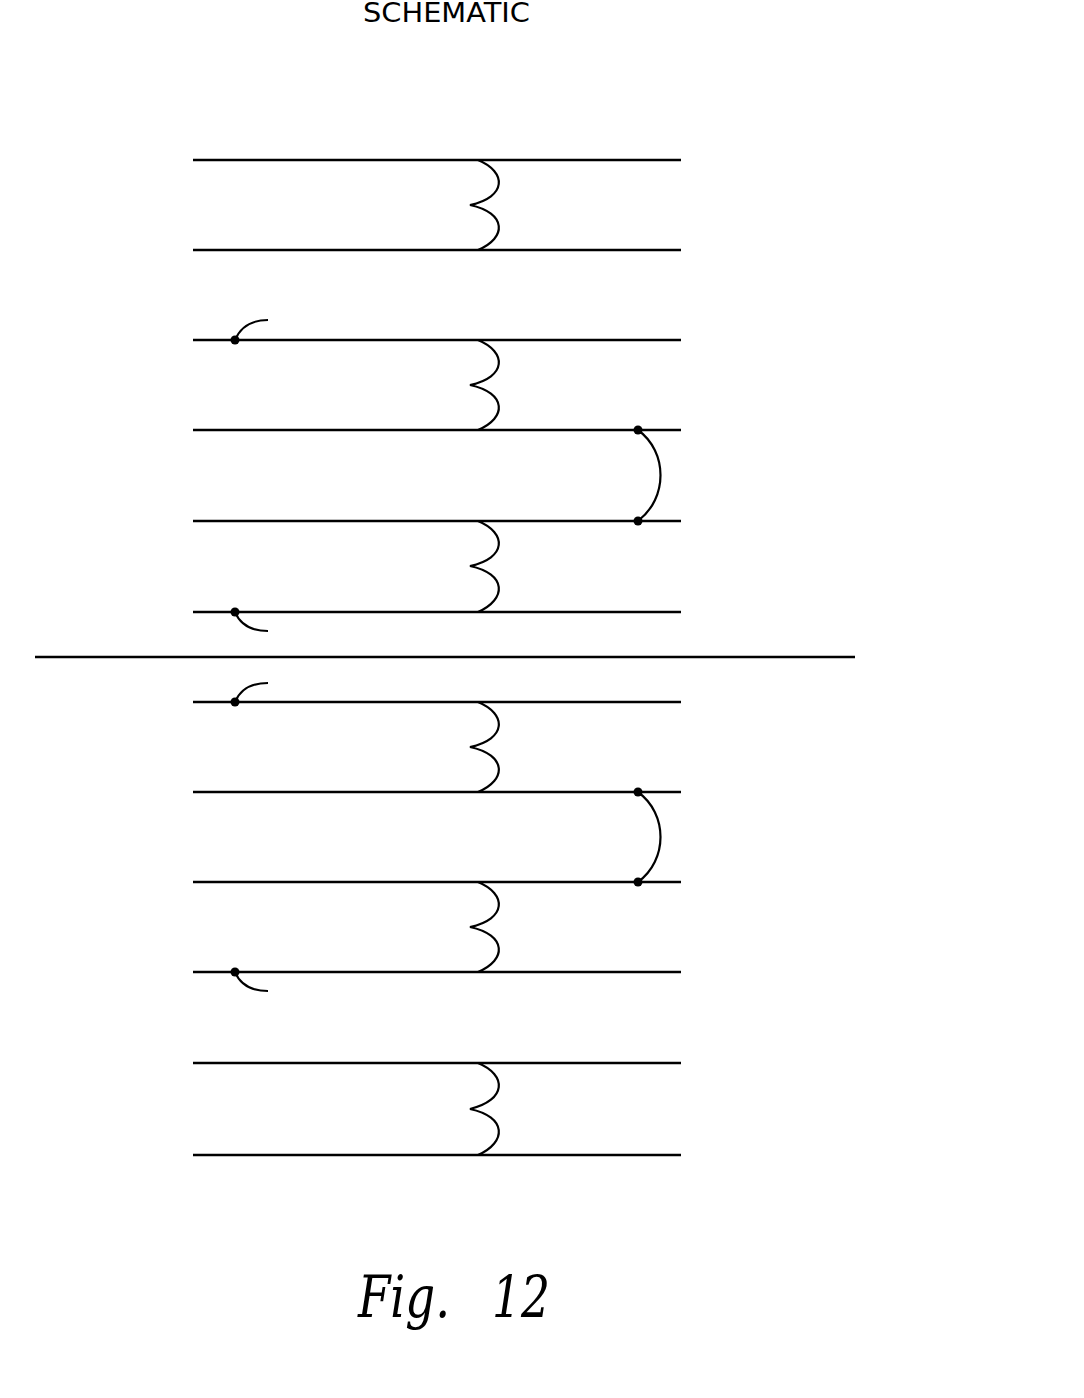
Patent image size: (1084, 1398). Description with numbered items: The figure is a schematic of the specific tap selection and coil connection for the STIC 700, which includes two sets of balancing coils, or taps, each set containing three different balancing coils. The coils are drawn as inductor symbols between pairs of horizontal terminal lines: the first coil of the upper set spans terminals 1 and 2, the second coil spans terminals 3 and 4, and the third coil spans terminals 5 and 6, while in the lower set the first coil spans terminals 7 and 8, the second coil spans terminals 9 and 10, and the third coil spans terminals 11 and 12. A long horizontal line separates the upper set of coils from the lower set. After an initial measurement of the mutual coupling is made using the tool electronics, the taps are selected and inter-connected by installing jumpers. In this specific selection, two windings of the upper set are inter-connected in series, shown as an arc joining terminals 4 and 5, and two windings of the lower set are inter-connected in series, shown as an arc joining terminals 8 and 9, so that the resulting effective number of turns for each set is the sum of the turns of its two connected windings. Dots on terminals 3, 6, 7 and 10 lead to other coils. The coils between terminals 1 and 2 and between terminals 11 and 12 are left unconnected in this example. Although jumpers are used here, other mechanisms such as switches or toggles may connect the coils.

The STIC 700 is at (779, 91).
The terminal 1 is at (414, 160).
The terminal 2 is at (414, 250).
The terminal 3 is at (414, 340).
The terminal 4 is at (414, 430).
The terminal 5 is at (414, 521).
The terminal 6 is at (414, 612).
The terminal 7 is at (414, 702).
The terminal 8 is at (414, 792).
The terminal 9 is at (414, 882).
The terminal 10 is at (406, 972).
The terminal 11 is at (406, 1063).
The terminal 12 is at (406, 1155).